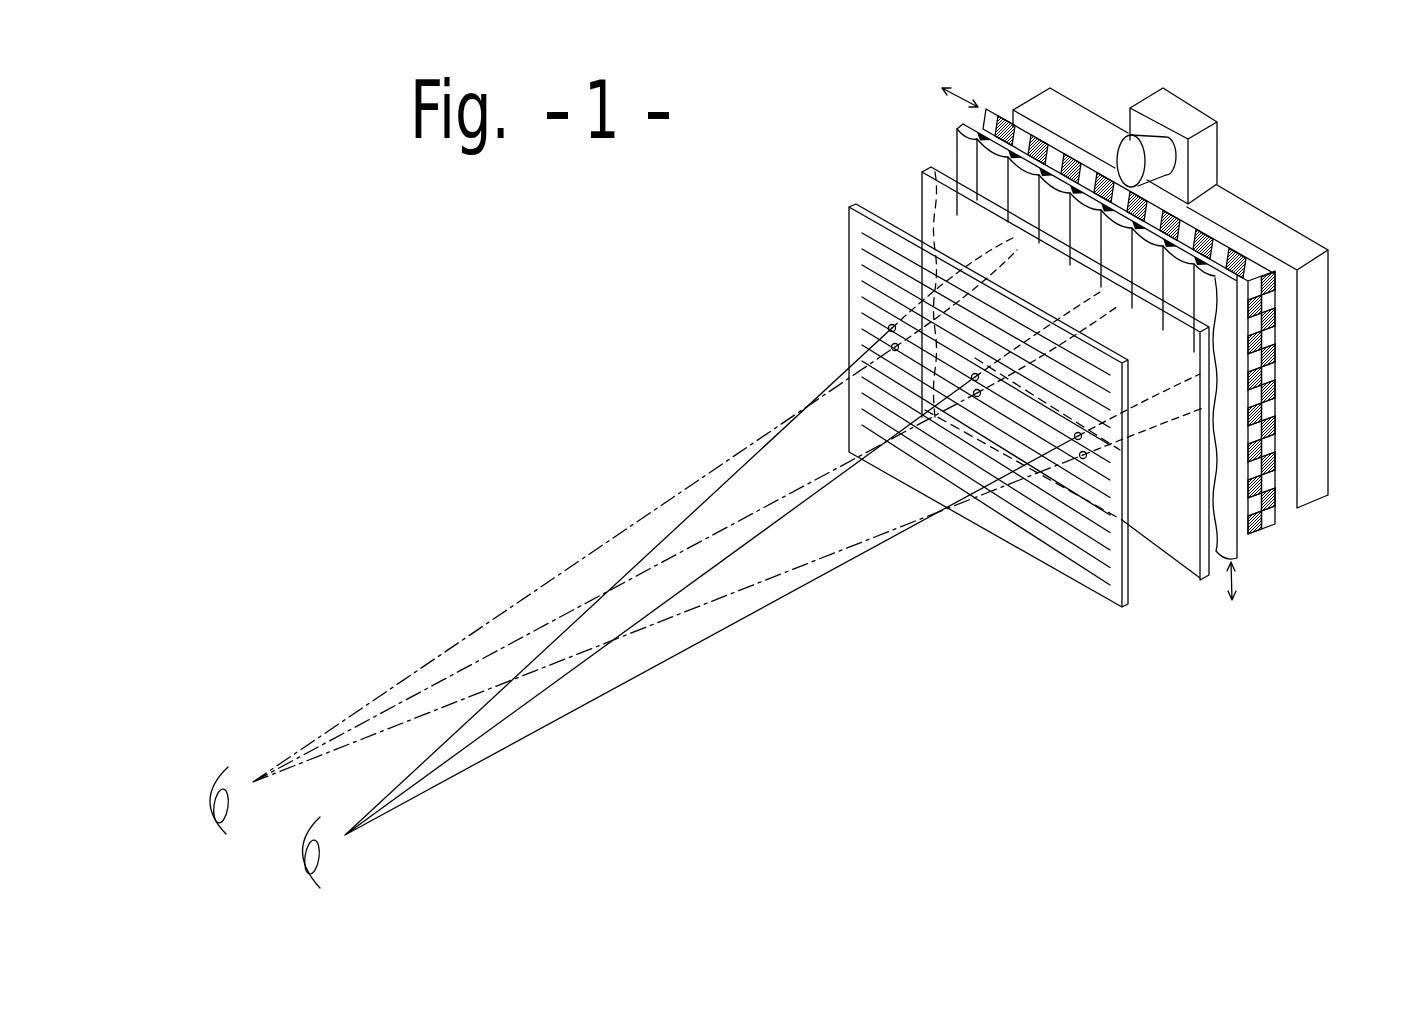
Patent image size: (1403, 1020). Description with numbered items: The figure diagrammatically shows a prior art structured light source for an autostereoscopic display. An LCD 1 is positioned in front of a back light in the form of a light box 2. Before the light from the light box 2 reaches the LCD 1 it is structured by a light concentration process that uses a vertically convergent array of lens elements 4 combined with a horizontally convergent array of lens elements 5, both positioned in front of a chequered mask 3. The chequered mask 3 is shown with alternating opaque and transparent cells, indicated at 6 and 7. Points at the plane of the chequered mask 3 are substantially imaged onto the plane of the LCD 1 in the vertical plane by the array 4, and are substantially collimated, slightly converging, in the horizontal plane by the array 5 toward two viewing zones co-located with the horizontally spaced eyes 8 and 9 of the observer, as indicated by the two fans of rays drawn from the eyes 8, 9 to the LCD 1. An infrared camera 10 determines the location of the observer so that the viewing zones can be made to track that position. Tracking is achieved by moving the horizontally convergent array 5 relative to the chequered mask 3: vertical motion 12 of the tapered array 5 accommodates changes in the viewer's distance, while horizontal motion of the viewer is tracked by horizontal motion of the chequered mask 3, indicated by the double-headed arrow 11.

The LCD 1 is at (1102, 594).
The light box 2 is at (1310, 488).
The chequered mask 3 is at (1277, 537).
The vertically convergent array of lens elements 4 is at (920, 172).
The horizontally convergent array of lens elements 5 is at (1243, 555).
The opaque barrier segments 6 is at (1273, 437).
The transparent segments 7 is at (1275, 436).
The eye 8 is at (302, 862).
The eye 9 is at (215, 790).
The infrared camera 10 is at (1178, 112).
The lateral displacement arrow 11 is at (963, 93).
The vertical motion 12 is at (1229, 588).